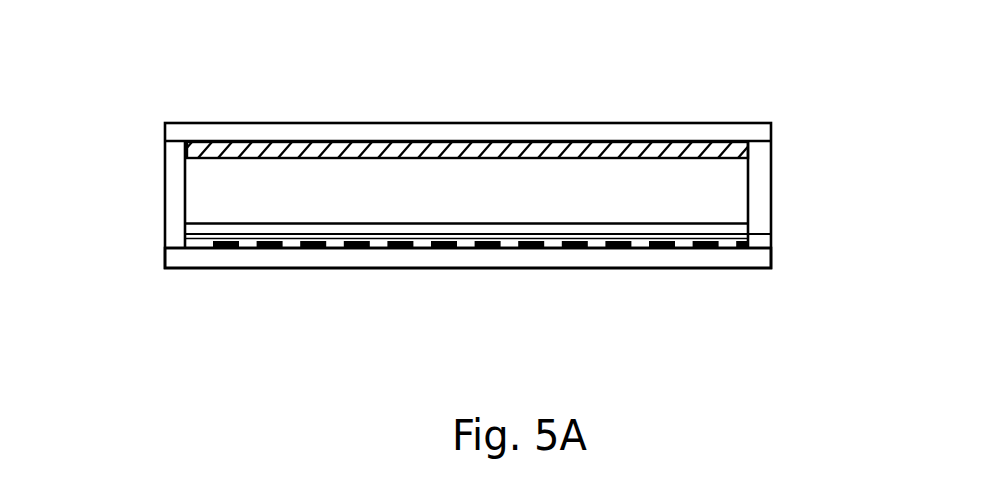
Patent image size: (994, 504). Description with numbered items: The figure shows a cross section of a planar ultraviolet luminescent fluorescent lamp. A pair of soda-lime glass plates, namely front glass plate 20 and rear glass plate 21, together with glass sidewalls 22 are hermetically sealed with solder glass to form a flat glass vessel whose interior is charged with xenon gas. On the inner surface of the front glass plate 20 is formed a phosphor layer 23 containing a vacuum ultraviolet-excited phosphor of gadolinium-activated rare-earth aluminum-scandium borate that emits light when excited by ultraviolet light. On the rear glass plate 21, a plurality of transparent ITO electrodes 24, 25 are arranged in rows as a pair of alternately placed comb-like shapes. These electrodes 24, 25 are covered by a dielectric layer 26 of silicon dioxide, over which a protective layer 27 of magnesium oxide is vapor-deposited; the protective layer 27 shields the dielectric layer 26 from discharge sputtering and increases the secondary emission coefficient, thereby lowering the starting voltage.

The front glass plate 20 is at (543, 130).
The rear glass plate 21 is at (570, 258).
The glass sidewalls 22 is at (758, 197).
The phosphor layer 23 is at (673, 143).
The transparent electrode 24 is at (218, 248).
The transparent electrode 25 is at (264, 248).
The dielectric layer 26 is at (738, 242).
The protective layer 27 is at (771, 234).